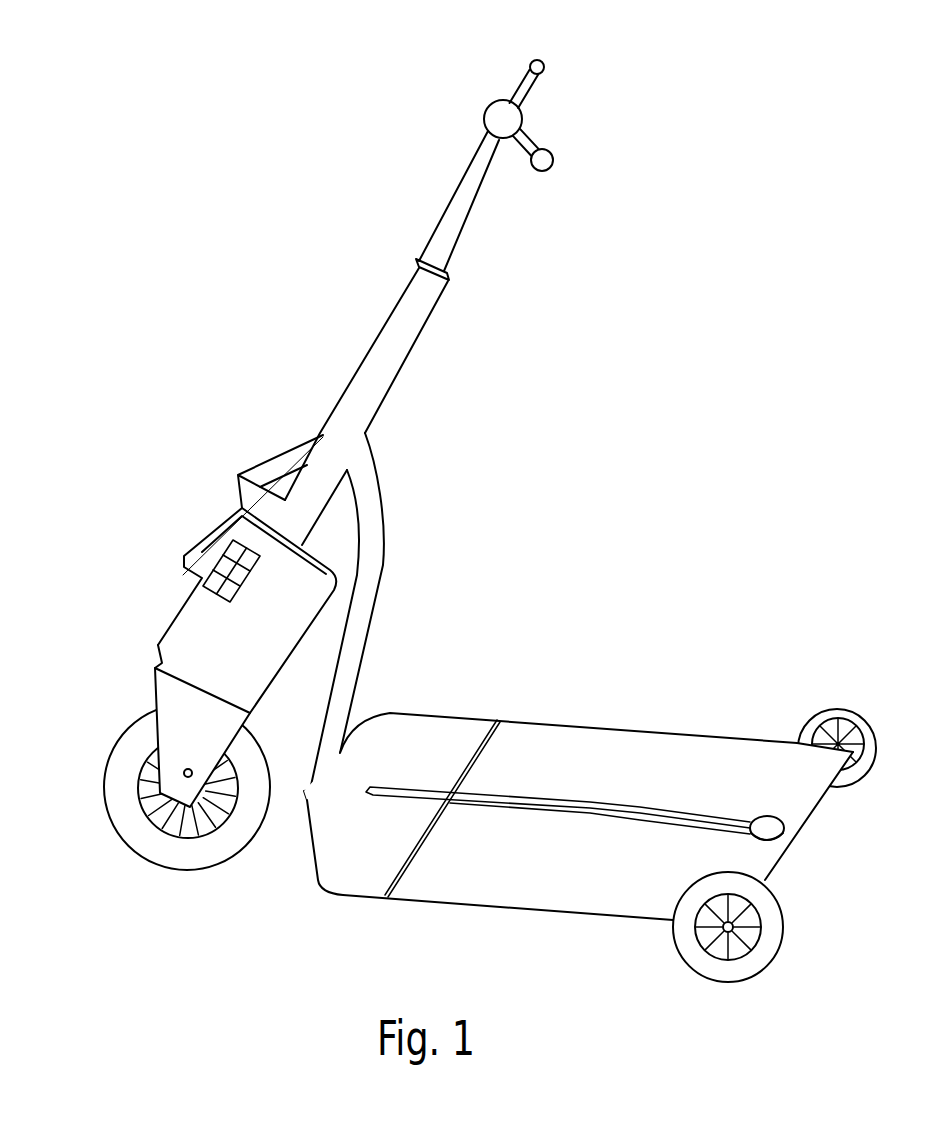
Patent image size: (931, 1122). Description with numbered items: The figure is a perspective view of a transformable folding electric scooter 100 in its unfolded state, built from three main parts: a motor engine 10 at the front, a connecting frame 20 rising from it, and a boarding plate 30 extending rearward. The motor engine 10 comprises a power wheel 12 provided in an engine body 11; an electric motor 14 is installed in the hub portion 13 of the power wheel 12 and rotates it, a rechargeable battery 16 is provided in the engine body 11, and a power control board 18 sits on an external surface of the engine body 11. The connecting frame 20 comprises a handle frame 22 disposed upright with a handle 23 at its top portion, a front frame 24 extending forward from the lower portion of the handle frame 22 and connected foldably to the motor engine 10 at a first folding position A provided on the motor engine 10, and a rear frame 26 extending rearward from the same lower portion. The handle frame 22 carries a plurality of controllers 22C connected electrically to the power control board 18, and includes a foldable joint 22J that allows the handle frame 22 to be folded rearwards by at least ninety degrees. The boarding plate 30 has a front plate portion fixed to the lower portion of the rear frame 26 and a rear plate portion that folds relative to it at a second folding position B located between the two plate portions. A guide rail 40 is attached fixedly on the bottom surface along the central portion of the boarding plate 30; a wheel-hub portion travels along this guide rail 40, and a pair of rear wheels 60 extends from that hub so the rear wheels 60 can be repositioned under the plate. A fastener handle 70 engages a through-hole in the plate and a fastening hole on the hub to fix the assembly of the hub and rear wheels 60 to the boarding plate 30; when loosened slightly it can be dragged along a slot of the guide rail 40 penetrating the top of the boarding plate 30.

The transformable folding electric scooter 100 is at (818, 105).
The motor engine 10 is at (128, 578).
The engine body 11 is at (126, 691).
The power wheel 12 is at (138, 848).
The hub portion 13 is at (187, 800).
The electric motor 14 is at (182, 752).
The rechargeable battery 16 is at (205, 622).
The power control board 18 is at (203, 565).
The connecting frame 20 is at (298, 333).
The handle frame 22 is at (473, 150).
The controllers 22C is at (533, 63).
The foldable joint 22J is at (417, 262).
The handle 23 is at (538, 61).
The front frame 24 is at (238, 478).
The rear frame 26 is at (380, 565).
The boarding plate 30 is at (669, 650).
The guide rail 40 is at (567, 813).
The rear wheels 60 is at (858, 780).
The fastener handle 70 is at (787, 848).
The first folding position A is at (200, 575).
The second folding position B is at (385, 897).